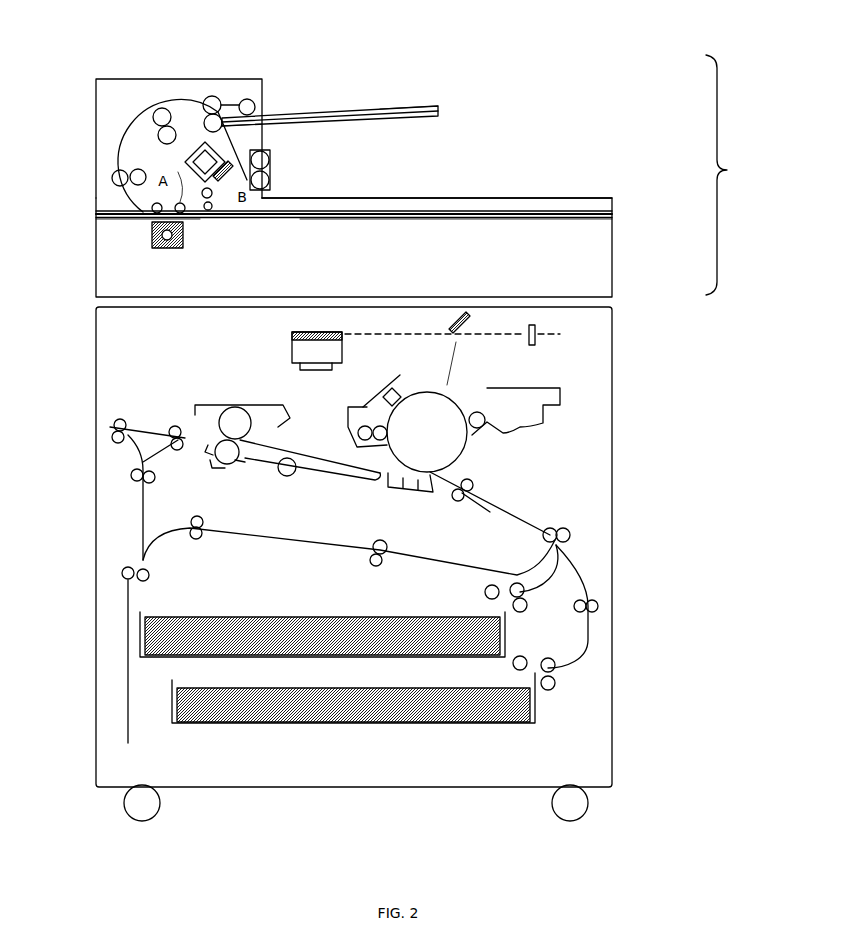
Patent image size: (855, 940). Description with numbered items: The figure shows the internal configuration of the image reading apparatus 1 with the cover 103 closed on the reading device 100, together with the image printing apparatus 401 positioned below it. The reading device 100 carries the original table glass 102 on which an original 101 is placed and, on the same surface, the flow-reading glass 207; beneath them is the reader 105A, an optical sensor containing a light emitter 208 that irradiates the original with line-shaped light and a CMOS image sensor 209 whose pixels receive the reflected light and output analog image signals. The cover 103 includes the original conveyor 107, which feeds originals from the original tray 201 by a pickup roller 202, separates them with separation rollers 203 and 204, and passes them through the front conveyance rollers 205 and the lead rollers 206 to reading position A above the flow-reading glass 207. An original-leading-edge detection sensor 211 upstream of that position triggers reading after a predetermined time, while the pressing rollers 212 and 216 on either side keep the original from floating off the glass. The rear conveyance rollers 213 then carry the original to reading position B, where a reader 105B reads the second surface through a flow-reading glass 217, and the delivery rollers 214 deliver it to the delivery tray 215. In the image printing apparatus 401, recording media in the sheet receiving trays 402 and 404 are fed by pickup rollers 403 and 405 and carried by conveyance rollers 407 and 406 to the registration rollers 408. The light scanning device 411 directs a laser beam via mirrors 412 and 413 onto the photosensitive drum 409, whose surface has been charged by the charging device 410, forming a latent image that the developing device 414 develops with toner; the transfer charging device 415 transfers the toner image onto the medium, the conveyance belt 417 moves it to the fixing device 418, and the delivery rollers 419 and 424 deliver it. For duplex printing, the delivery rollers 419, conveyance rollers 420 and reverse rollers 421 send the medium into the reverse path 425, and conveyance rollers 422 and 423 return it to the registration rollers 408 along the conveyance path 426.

The image reading apparatus 1 is at (731, 170).
The reading device 100 is at (616, 262).
The original 101 is at (362, 106).
The original table glass 102 is at (468, 218).
The cover 103 is at (616, 213).
The reader 105A is at (135, 260).
The reader 105B is at (267, 120).
The original conveyor 107 is at (434, 52).
The original tray 201 is at (412, 120).
The pickup roller 202 is at (253, 99).
The separation roller 203 is at (210, 96).
The separation roller 204 is at (205, 114).
The front conveyance rollers 205 is at (157, 108).
The lead rollers 206 is at (117, 176).
The flow-reading glass 207 is at (145, 215).
The light emitter 208 is at (183, 226).
The CMOS image sensor 209 is at (170, 250).
The original-leading-edge detection sensor 211 is at (133, 197).
The pressing roller 212 is at (150, 212).
The rear conveyance rollers 213 is at (253, 218).
The delivery rollers 214 is at (272, 177).
The delivery tray 215 is at (485, 197).
The pressing roller 216 is at (167, 145).
The flow-reading glass 217 is at (240, 158).
The image printing apparatus 401 is at (620, 340).
The sheet receiving tray 402 is at (507, 632).
The pickup roller 403 is at (482, 594).
The sheet receiving tray 404 is at (540, 712).
The pickup roller 405 is at (510, 666).
The conveyance rollers 406 is at (563, 525).
The conveyance rollers 407 is at (600, 607).
The registration rollers 408 is at (475, 480).
The photosensitive drum 409 is at (455, 400).
The charging device 410 is at (407, 392).
The light scanning device 411 is at (290, 344).
The mirror 412 is at (560, 339).
The mirror 413 is at (447, 327).
The developing device 414 is at (530, 390).
The transfer charging device 415 is at (417, 497).
The conveyance belt 417 is at (295, 480).
The fixing device 418 is at (240, 405).
The delivery rollers 419 is at (172, 428).
The conveyance rollers 420 is at (157, 480).
The reverse rollers 421 is at (152, 580).
The conveyance rollers 422 is at (198, 538).
The conveyance rollers 423 is at (375, 537).
The delivery rollers 424 is at (113, 422).
The reverse path 425 is at (124, 586).
The conveyance path 426 is at (293, 545).